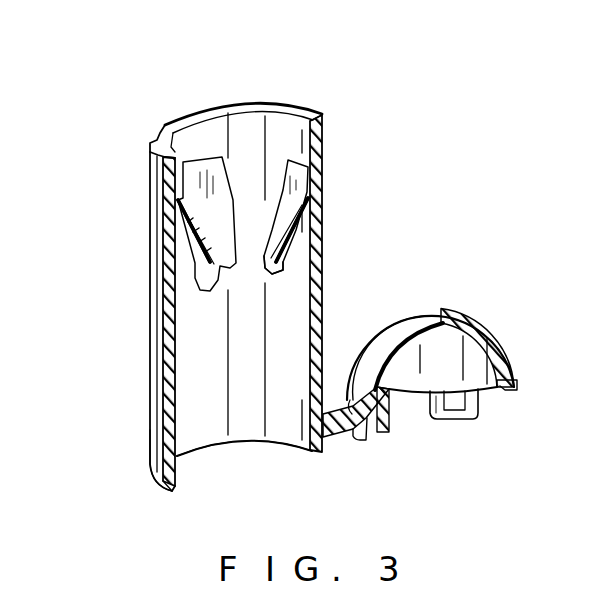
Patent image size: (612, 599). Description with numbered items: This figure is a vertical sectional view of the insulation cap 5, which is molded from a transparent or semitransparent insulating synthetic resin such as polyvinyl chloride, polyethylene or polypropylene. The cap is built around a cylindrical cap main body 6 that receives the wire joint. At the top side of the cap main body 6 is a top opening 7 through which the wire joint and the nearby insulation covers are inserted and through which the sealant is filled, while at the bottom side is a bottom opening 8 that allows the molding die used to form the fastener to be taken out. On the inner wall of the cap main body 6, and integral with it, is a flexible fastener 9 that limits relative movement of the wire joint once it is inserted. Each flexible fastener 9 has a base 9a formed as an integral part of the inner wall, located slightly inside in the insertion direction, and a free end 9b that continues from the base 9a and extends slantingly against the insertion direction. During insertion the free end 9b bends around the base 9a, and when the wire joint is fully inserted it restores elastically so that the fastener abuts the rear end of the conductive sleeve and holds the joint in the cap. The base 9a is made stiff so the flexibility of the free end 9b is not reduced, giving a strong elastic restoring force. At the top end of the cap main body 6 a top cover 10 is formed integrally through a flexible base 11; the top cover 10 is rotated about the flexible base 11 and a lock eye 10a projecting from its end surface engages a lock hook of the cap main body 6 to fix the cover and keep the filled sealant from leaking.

The insulation cap 5 is at (150, 310).
The cap main body 6 is at (153, 423).
The top opening 7 is at (276, 118).
The bottom opening 8 is at (292, 437).
The flexible fastener 9 is at (202, 172).
The base 9a is at (318, 173).
The free end 9b is at (272, 266).
The top cover 10 is at (462, 313).
The lock eye 10a is at (462, 421).
The flexible base 11 is at (352, 434).